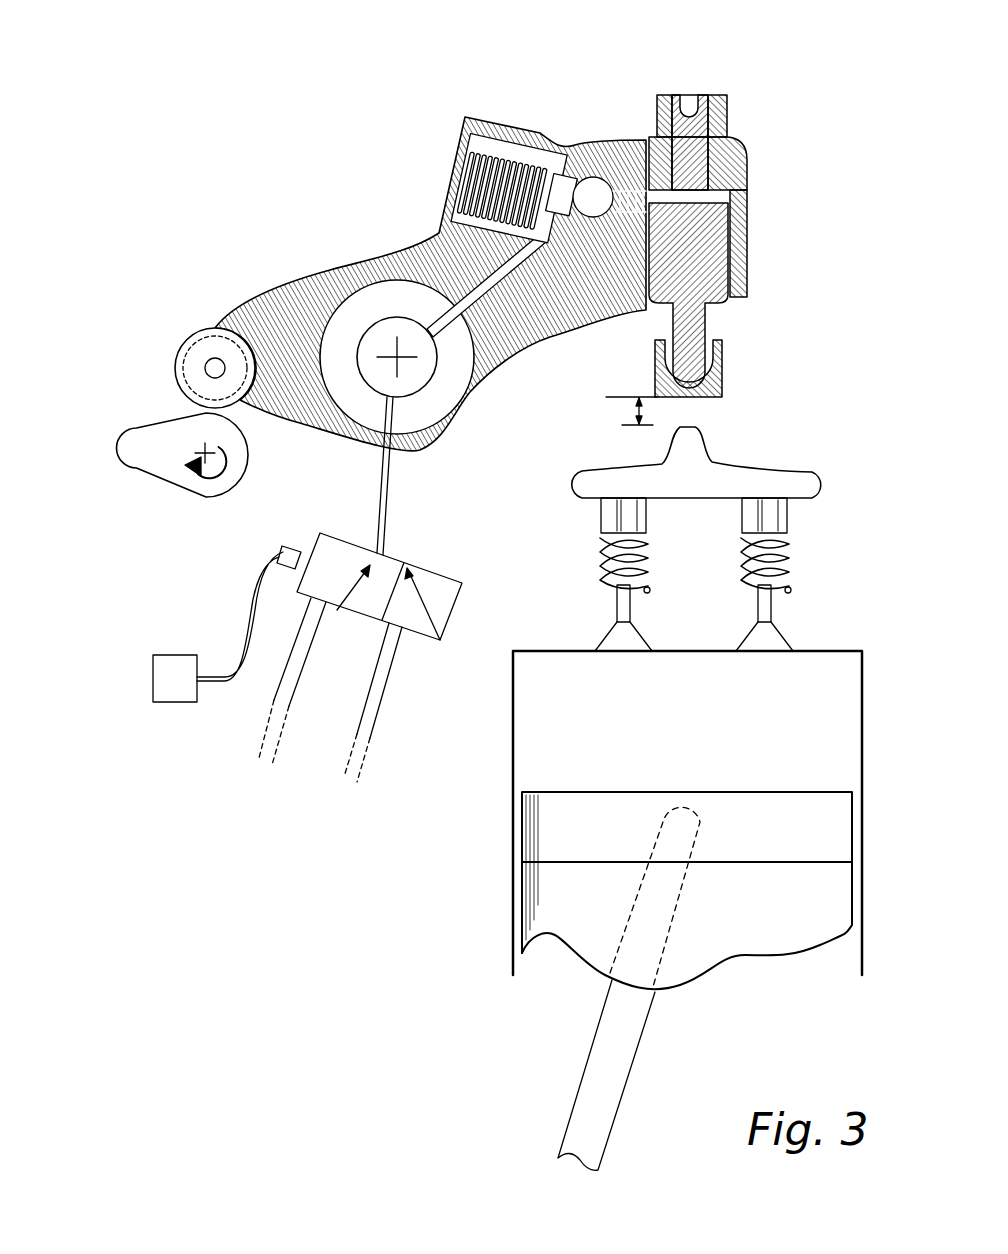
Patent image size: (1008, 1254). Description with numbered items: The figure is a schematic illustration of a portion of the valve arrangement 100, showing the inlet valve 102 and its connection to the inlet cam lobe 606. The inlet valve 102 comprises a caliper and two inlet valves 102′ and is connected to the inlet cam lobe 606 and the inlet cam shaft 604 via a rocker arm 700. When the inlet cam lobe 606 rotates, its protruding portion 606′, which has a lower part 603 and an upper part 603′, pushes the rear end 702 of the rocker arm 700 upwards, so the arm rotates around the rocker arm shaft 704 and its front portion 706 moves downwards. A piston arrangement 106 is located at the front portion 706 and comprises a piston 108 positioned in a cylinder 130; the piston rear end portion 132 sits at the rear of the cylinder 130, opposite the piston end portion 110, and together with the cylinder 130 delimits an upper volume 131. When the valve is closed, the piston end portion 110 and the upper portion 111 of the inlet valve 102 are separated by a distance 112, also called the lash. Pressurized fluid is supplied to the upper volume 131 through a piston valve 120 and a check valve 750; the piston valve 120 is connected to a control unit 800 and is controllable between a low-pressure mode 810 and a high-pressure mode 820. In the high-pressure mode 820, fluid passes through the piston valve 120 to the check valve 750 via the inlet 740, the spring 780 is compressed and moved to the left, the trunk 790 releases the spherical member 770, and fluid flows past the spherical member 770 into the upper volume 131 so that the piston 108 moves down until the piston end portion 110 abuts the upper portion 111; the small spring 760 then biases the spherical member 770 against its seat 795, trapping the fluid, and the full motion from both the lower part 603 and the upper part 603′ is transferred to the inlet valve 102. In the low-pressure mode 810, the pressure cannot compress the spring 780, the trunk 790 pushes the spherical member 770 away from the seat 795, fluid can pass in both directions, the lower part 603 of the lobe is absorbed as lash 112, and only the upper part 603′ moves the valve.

The valve arrangement 100 is at (290, 240).
The rocker arm 700 is at (342, 265).
The rear end 702 is at (193, 328).
The rocker arm shaft 704 is at (397, 357).
The inlet 740 is at (476, 266).
The spring 780 is at (487, 172).
The trunk 790 is at (558, 178).
The check valve 750 is at (575, 168).
The spherical member 770 is at (600, 190).
The small spring 760 is at (624, 235).
The seat 795 is at (566, 228).
The upper volume 131 is at (658, 192).
The piston rear end portion 132 is at (740, 182).
The cylinder 130 is at (760, 198).
The piston arrangement 106 is at (755, 200).
The front portion 706 is at (752, 244).
The piston 108 is at (698, 258).
The piston end portion 110 is at (742, 398).
The upper portion 111 is at (690, 420).
The inlet valve 102 is at (780, 488).
The distance 112 is at (615, 422).
The inlet valves 102′ is at (612, 602).
The piston valve 120 is at (436, 684).
The low-pressure mode 810 is at (338, 530).
The high-pressure mode 820 is at (437, 567).
The control unit 800 is at (150, 672).
The lower part 603 is at (150, 423).
The inlet cam shaft 604 is at (205, 447).
The upper part 603′ is at (123, 452).
The inlet cam lobe 606 is at (203, 500).
The protruding portion 606′ is at (156, 458).